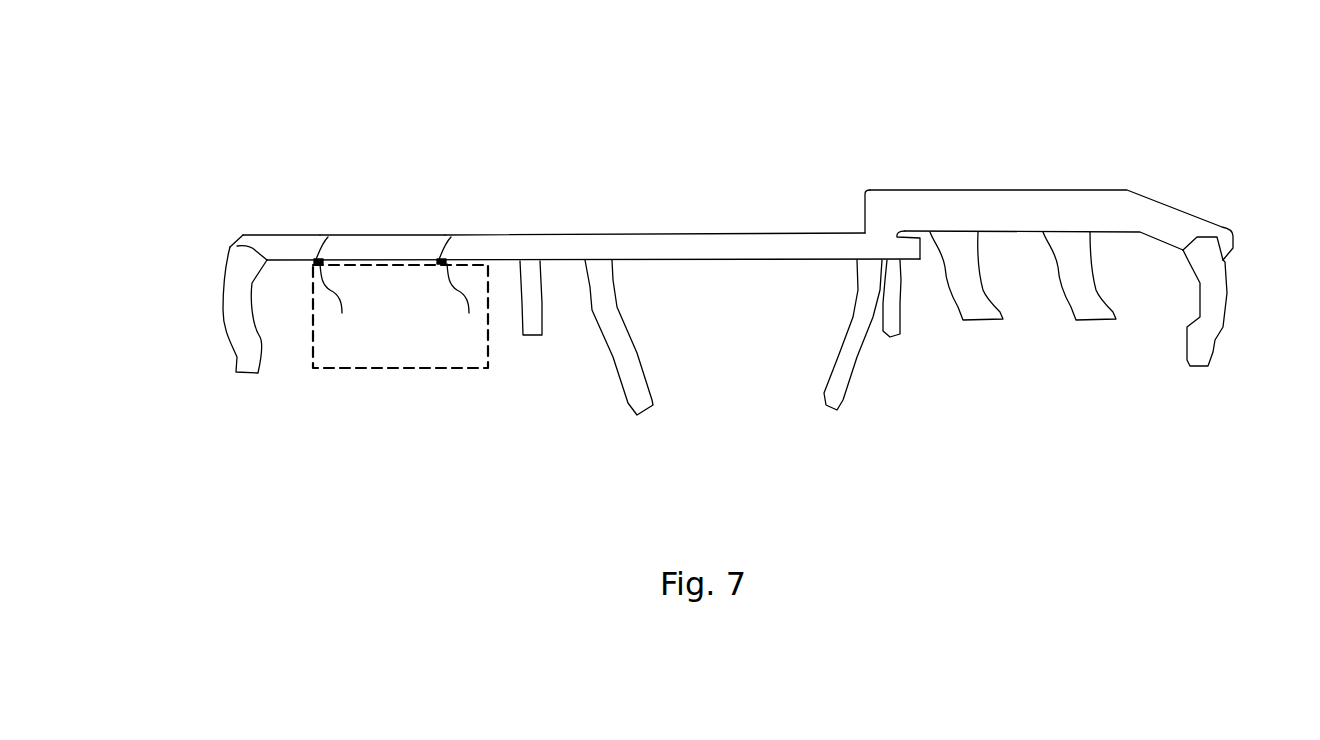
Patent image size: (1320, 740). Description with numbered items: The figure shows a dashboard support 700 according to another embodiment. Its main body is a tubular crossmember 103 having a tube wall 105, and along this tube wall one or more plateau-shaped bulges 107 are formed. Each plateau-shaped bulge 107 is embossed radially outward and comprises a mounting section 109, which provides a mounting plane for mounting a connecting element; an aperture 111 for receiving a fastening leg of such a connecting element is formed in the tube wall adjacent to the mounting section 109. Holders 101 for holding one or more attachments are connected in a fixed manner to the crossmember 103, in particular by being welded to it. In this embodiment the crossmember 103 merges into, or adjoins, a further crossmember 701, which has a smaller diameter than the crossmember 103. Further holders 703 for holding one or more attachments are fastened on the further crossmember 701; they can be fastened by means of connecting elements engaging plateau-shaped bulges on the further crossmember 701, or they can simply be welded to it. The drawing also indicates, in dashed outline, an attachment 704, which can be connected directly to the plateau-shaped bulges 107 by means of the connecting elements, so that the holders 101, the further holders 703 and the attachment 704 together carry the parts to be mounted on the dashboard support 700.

The dashboard support 700 is at (233, 188).
The holder 101 is at (240, 335).
The tubular crossmember 103 is at (598, 250).
The tube wall 105 is at (385, 242).
The plateau-shaped bulge 107 is at (307, 266).
The mounting section 109 is at (402, 302).
The aperture 111 is at (328, 237).
The further crossmember 701 is at (1012, 203).
The further holder 703 is at (982, 310).
The attachment 704 is at (385, 359).